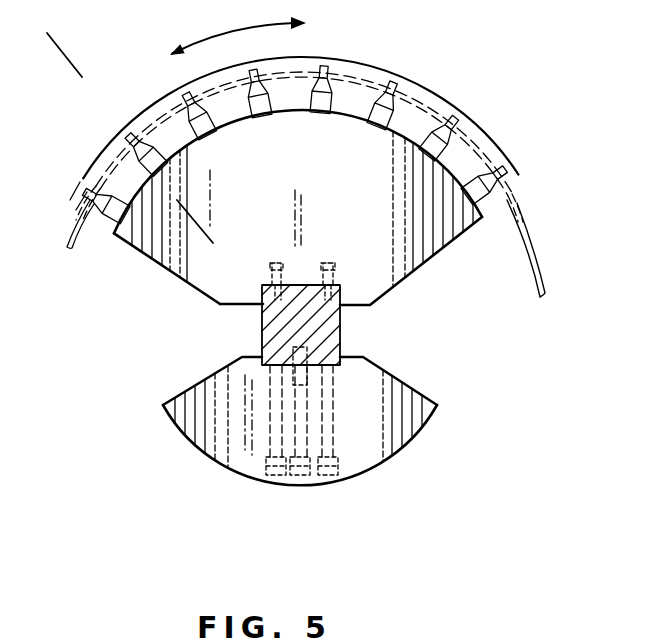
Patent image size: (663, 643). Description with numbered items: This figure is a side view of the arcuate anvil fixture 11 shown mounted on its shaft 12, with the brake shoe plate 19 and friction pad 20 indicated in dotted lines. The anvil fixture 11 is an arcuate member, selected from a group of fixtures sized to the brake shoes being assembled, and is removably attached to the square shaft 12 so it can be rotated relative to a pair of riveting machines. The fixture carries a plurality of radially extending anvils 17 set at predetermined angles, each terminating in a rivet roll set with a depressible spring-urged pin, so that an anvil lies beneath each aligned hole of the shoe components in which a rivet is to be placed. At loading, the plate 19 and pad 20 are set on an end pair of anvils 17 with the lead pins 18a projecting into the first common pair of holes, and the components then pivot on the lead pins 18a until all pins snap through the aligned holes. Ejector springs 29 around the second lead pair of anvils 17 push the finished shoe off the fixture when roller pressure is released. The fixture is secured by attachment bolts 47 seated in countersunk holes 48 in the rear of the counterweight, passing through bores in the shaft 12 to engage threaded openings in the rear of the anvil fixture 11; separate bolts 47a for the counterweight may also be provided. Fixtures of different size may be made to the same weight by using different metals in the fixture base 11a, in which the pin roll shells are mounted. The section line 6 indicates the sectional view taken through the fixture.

The section line 6- 6 is at (64, 38).
The anvil fixture 11 is at (442, 302).
The fixture base 11a is at (202, 278).
The shaft 12 is at (340, 334).
The anvils 17 is at (245, 108).
The lead pins 18a is at (84, 190).
The brake shoe plate 19 is at (537, 250).
The friction pad 20 is at (503, 157).
The ejector springs 29 is at (150, 148).
The attachment bolts 47 is at (268, 398).
The separate bolts 47a is at (303, 495).
The holes 48 is at (253, 478).